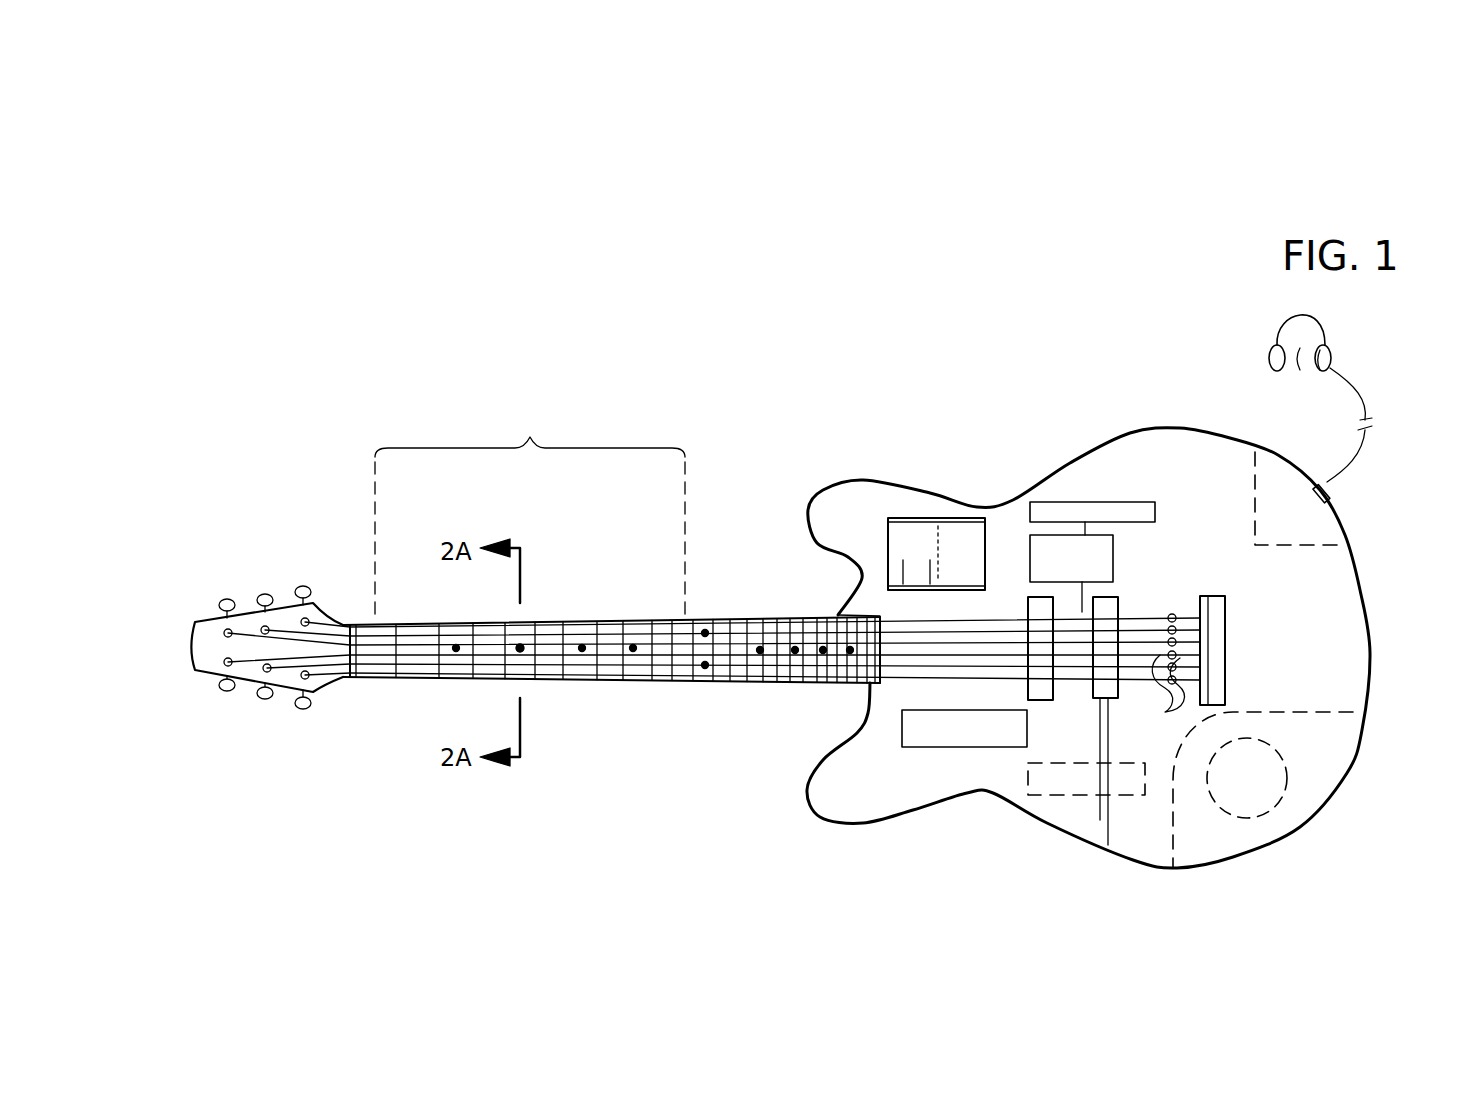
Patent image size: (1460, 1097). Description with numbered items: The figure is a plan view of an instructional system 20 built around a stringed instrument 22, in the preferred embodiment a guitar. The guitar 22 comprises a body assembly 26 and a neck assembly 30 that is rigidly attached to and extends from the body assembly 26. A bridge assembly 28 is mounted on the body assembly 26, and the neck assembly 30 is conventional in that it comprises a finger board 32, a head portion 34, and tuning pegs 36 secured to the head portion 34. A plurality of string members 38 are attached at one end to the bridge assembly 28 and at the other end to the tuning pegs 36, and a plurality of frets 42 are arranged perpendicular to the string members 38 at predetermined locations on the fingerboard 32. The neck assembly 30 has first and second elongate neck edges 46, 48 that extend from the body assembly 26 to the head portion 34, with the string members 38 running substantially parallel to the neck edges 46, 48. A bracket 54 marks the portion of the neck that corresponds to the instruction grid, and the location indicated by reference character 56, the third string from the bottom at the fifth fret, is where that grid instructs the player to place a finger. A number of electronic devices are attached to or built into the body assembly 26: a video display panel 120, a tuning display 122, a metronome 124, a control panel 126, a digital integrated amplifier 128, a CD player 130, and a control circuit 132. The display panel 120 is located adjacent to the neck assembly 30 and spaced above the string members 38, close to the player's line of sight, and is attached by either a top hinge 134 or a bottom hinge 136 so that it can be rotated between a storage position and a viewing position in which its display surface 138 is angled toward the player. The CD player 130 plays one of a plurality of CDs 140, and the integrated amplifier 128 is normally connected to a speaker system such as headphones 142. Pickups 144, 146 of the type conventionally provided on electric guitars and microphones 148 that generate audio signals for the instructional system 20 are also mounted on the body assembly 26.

The instructional system 20 is at (778, 430).
The instrument 22 is at (1042, 443).
The body assembly 26 is at (1378, 578).
The bridge assembly 28 is at (1232, 652).
The neck assembly 30 is at (631, 600).
The finger board 32 is at (720, 640).
The head portion 34 is at (203, 660).
The tuning pegs 36 is at (302, 585).
The string members 38 is at (905, 676).
The frets 42 is at (540, 668).
The first elongate neck edge 46 is at (413, 680).
The second elongate neck edge 48 is at (430, 624).
The bracket 54 is at (530, 514).
The finger placement location 56 is at (535, 645).
The video display panel 120 is at (943, 533).
The tuning display 122 is at (1037, 507).
The metronome 124 is at (1037, 560).
The control panel 126 is at (953, 740).
The digital integrated amplifier 128 is at (1322, 524).
The CD player 130 is at (1318, 748).
The control circuit 132 is at (1057, 790).
The top hinge 134 is at (933, 530).
The bottom hinge 136 is at (890, 580).
The display surface 138 is at (902, 537).
The CDs 140 is at (1282, 783).
The headphones 142 is at (1335, 338).
The pickup 144 is at (1037, 683).
The pickup 146 is at (1118, 698).
The microphones 148 is at (1165, 712).